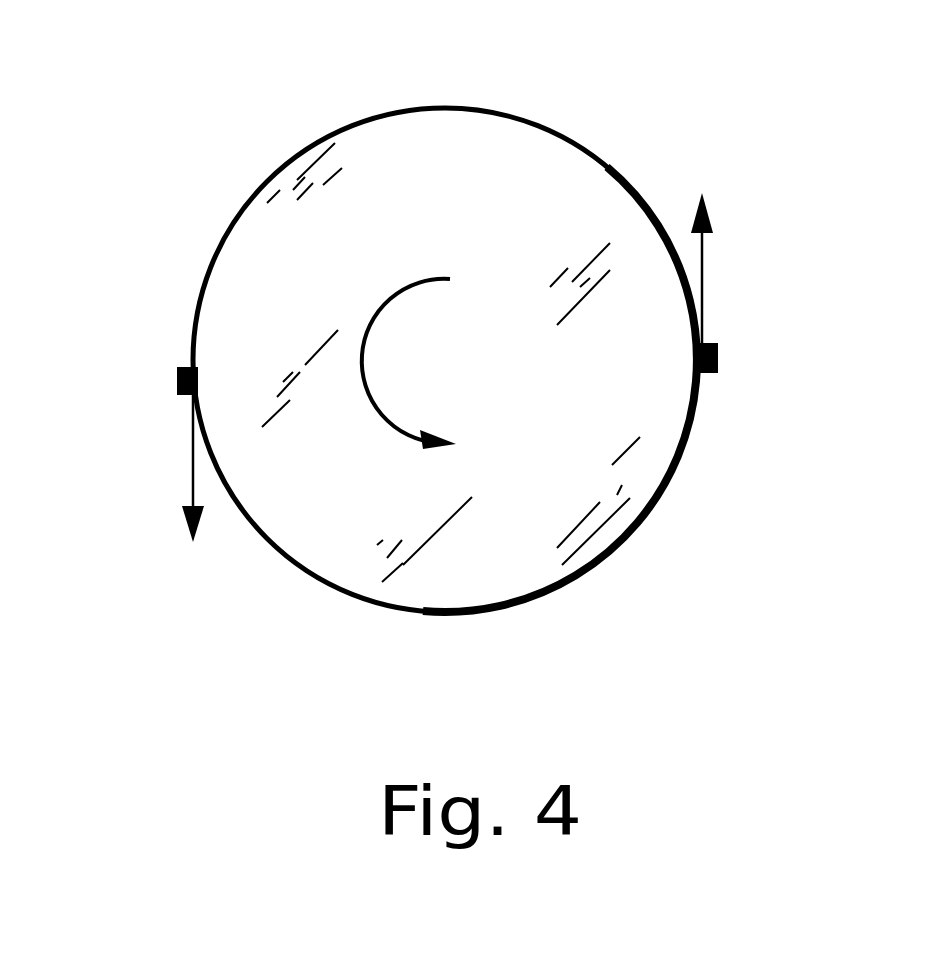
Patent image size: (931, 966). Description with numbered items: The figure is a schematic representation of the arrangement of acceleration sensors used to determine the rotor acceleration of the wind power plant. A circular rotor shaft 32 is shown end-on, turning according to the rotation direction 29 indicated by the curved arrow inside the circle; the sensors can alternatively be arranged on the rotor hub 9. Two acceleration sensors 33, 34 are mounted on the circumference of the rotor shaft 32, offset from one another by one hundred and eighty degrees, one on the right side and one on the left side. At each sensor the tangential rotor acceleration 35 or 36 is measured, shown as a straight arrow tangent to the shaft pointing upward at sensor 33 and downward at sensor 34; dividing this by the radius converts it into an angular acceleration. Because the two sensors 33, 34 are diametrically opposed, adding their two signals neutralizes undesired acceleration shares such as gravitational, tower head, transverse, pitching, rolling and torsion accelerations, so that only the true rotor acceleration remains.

The rotor hub 9 is at (467, 168).
The rotor shaft 32 is at (542, 182).
The rotation direction 29 is at (388, 304).
The acceleration sensor 33 is at (718, 362).
The acceleration sensor 34 is at (177, 380).
The rotor acceleration 35 is at (702, 265).
The rotor acceleration 36 is at (190, 455).